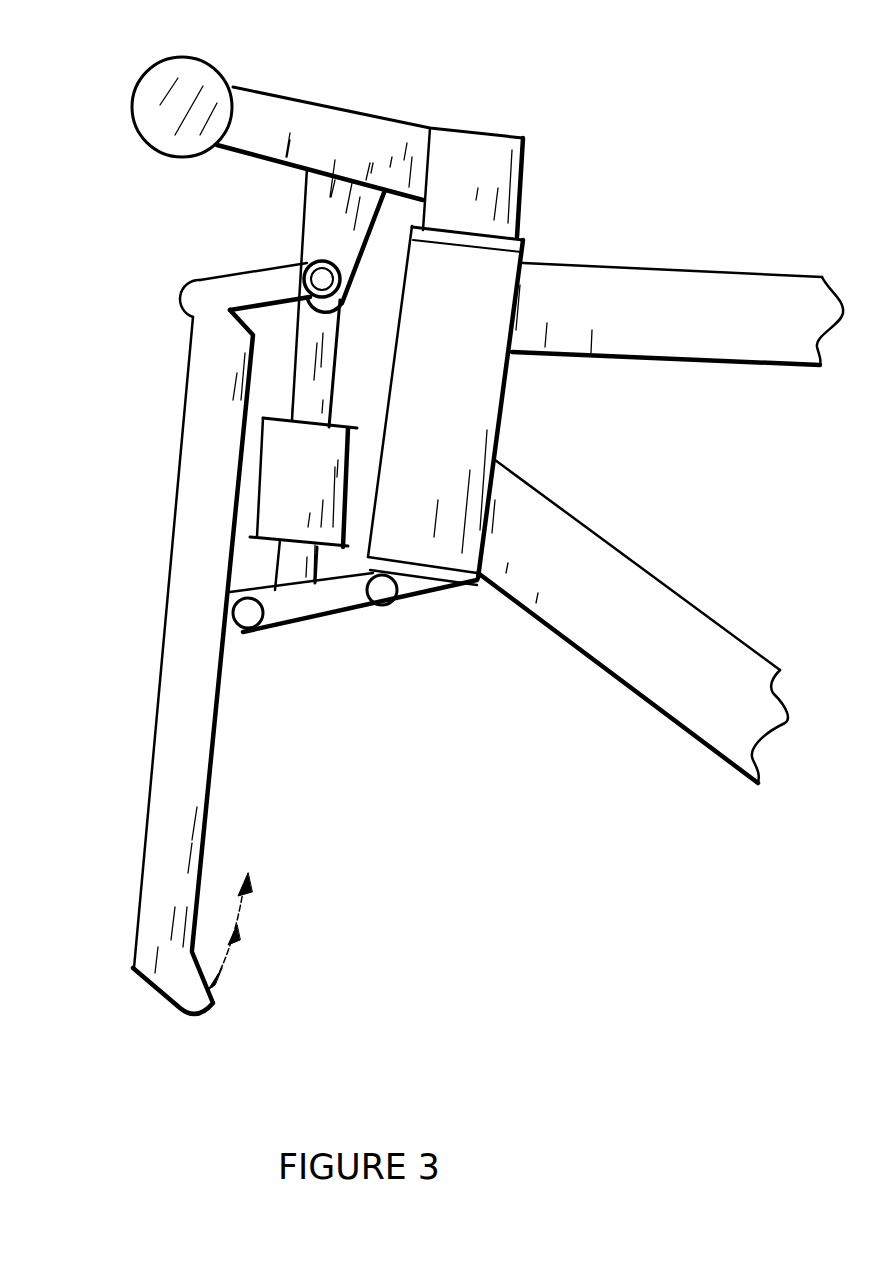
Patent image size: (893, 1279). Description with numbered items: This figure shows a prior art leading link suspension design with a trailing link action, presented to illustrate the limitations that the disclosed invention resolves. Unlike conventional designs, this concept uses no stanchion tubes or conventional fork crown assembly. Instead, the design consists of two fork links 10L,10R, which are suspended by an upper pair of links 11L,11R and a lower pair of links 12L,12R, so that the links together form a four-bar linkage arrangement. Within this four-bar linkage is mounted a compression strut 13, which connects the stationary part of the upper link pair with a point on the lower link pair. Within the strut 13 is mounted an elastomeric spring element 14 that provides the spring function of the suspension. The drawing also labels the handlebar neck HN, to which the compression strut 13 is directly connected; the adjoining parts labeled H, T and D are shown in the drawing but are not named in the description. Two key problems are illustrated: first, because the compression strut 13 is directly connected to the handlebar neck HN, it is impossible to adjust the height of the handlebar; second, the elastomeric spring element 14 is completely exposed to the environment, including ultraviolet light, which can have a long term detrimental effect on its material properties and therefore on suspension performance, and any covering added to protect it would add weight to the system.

The handlebar neck HN is at (355, 142).
The head H is at (478, 272).
The top arm T is at (707, 293).
The down arm D is at (592, 565).
The compression strut 13 is at (333, 343).
The elastomeric spring element 14 is at (323, 466).
The upper pair of links 11L,11R is at (260, 285).
The lower pair of links 12L,12R is at (320, 608).
The fork links 10L,10R is at (182, 790).